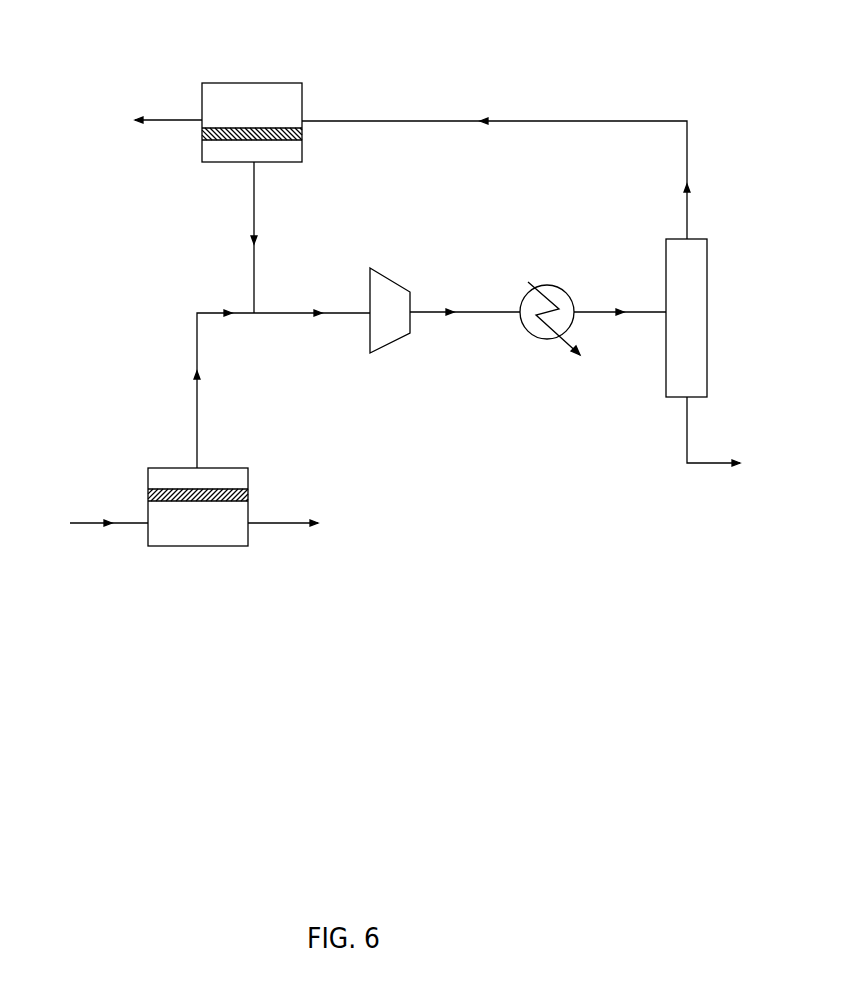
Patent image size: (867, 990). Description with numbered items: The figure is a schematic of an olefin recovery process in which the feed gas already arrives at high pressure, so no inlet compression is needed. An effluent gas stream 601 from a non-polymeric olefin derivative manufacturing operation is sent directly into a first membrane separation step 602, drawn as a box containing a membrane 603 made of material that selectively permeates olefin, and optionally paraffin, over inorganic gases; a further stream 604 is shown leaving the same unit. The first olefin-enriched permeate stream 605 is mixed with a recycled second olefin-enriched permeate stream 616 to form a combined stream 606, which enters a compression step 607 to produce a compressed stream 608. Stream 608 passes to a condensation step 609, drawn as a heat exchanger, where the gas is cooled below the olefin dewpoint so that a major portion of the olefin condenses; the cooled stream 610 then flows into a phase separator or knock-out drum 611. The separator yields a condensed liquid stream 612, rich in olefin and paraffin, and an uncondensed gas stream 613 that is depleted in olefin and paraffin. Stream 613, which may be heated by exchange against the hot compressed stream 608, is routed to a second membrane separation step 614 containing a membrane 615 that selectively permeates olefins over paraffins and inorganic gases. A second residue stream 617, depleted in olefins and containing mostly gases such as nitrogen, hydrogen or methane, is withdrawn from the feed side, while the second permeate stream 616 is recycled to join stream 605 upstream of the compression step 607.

The effluent gas stream 601 is at (89, 523).
The first membrane separation step 602 is at (208, 546).
The membrane 603 is at (248, 495).
The first retentate stream 604 is at (303, 523).
The first olefin-enriched permeate stream 605 is at (206, 389).
The combined stream 606 is at (312, 325).
The compression step 607 is at (393, 345).
The compressed stream 608 is at (465, 325).
The condensation step 609 is at (548, 285).
The cooled stream 610 is at (620, 325).
The phase separator 611 is at (707, 284).
The condensed liquid stream 612 is at (733, 435).
The uncondensed gas stream 613 is at (514, 178).
The second membrane separation step 614 is at (262, 83).
The membrane 615 is at (302, 134).
The second permeate stream 616 is at (233, 237).
The second residue stream 617 is at (148, 121).